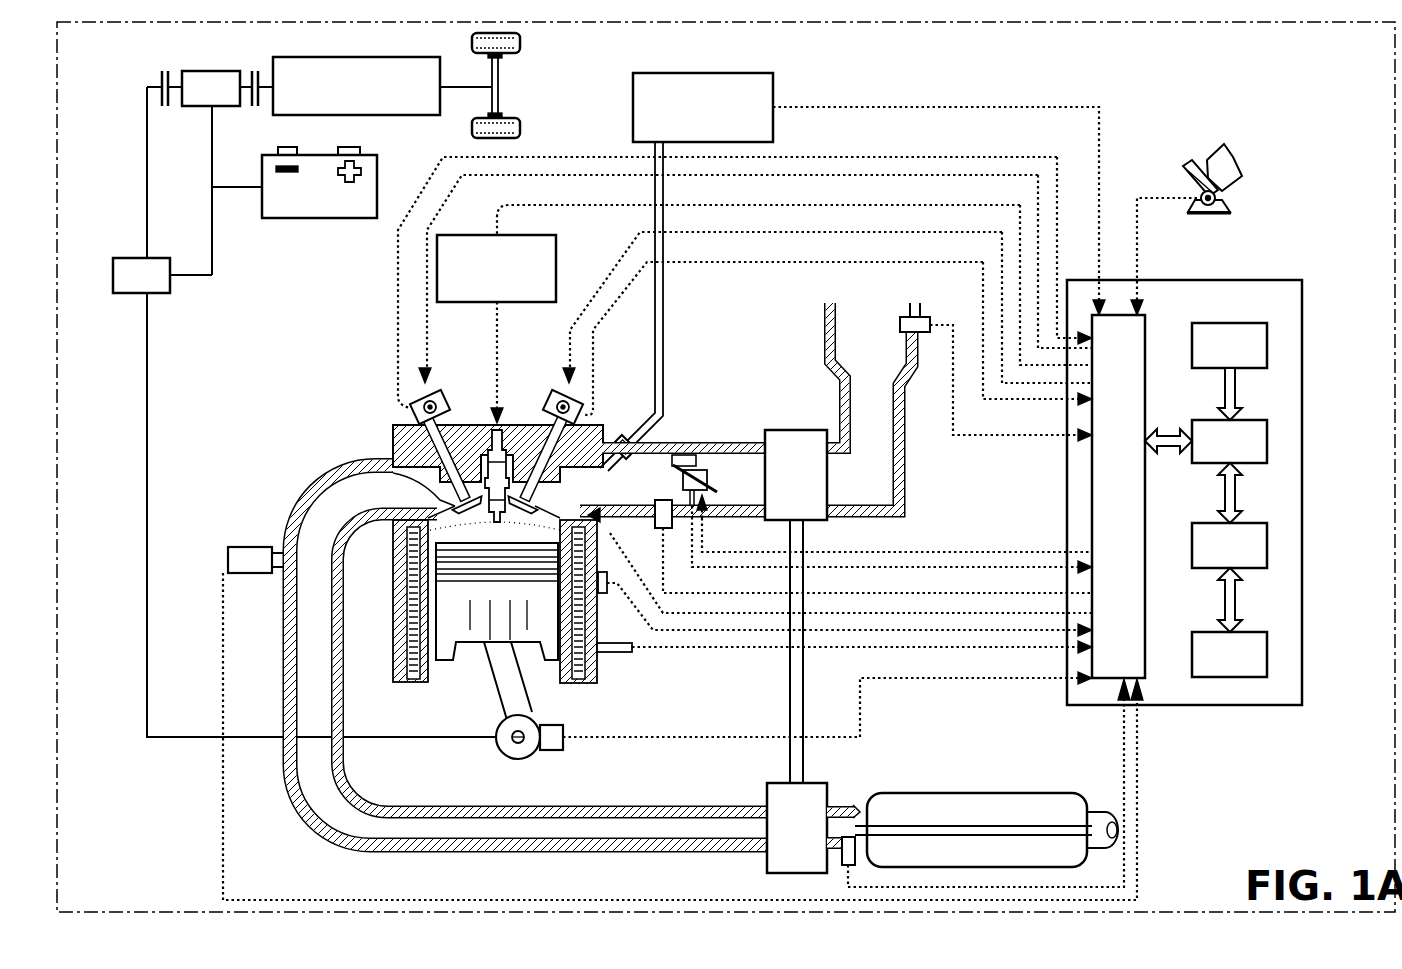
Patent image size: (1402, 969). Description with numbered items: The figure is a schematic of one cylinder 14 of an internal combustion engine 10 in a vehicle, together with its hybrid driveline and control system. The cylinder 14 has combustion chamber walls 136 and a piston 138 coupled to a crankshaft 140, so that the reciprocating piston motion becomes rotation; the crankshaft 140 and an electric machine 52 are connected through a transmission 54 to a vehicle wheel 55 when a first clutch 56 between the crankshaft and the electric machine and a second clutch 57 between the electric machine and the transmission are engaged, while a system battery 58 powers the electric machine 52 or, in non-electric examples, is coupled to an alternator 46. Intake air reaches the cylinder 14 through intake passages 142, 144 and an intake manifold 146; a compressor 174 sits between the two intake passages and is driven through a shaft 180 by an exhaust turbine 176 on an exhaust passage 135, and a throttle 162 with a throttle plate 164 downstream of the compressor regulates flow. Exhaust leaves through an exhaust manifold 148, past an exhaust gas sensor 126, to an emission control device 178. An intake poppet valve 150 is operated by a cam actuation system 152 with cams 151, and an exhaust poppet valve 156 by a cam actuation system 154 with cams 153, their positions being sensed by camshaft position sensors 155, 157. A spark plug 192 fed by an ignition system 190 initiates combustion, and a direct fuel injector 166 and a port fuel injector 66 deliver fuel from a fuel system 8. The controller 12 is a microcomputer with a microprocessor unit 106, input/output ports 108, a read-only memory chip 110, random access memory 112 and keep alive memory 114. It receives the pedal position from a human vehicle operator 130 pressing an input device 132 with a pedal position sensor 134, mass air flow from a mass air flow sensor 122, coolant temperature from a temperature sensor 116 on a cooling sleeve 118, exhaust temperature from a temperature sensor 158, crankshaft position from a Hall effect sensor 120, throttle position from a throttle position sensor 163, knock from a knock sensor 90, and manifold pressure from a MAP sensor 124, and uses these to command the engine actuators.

The fuel system 8 is at (740, 73).
The internal combustion engine 10 is at (323, 377).
The controller 12 is at (1302, 281).
The cylinder 14 is at (437, 560).
The alternator 46 is at (113, 292).
The electric machine 52 is at (196, 71).
The transmission 54 is at (415, 115).
The vehicle wheel 55 is at (472, 43).
The first clutch 56 is at (162, 78).
The second clutch 57 is at (252, 72).
The system battery 58 is at (315, 218).
The port fuel injector 66 is at (622, 440).
The knock sensor 90 is at (608, 655).
The microprocessor unit 106 is at (1267, 440).
The input/output ports 108 is at (1145, 330).
The read-only memory chip 110 is at (1267, 342).
The random access memory 112 is at (1267, 548).
The keep alive memory 114 is at (1267, 655).
The temperature sensor 116 is at (604, 595).
The cooling sleeve 118 is at (592, 683).
The Hall effect sensor 120 is at (560, 752).
The mass air flow sensor 122 is at (924, 317).
The MAP sensor 124 is at (668, 530).
The exhaust gas sensor 126 is at (228, 550).
The human vehicle operator 130 is at (1245, 162).
The input device 132 is at (1188, 176).
The pedal position sensor 134 is at (1220, 198).
The exhaust passage 135 is at (684, 806).
The combustion chamber walls 136 is at (430, 685).
The piston 138 is at (478, 635).
The crankshaft 140 is at (503, 755).
The intake passage 142 is at (873, 341).
The intake passage 144 is at (746, 407).
The intake manifold 146 is at (675, 491).
The exhaust manifold 148 is at (528, 656).
The intake poppet valve 150 is at (512, 470).
The cam 151 is at (556, 398).
The cam actuation system 152 is at (560, 382).
The cam 153 is at (445, 402).
The cam actuation system 154 is at (435, 380).
The camshaft position sensor 155 is at (582, 408).
The exhaust poppet valve 156 is at (440, 496).
The camshaft position sensor 157 is at (415, 402).
The temperature sensor 158 is at (842, 862).
The throttle 162 is at (700, 463).
The throttle position sensor 163 is at (700, 520).
The throttle plate 164 is at (682, 455).
The direct fuel injector 166 is at (562, 506).
The compressor 174 is at (796, 475).
The exhaust turbine 176 is at (813, 828).
The emission control device 178 is at (962, 793).
The shaft 180 is at (805, 750).
The ignition system 190 is at (450, 235).
The spark plug 192 is at (488, 455).